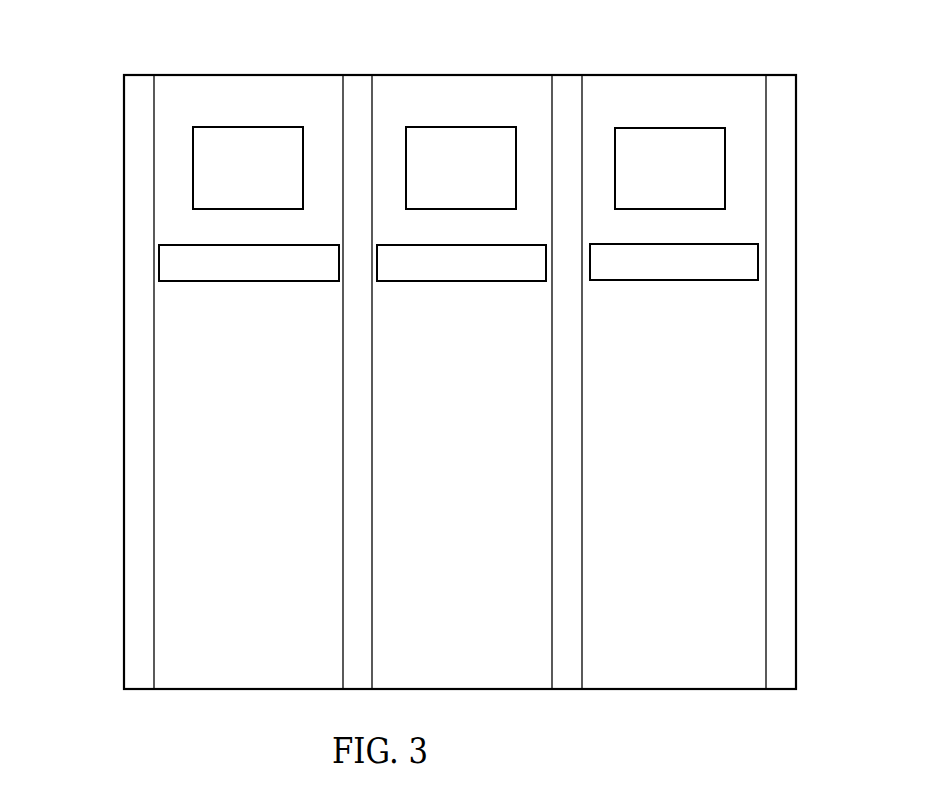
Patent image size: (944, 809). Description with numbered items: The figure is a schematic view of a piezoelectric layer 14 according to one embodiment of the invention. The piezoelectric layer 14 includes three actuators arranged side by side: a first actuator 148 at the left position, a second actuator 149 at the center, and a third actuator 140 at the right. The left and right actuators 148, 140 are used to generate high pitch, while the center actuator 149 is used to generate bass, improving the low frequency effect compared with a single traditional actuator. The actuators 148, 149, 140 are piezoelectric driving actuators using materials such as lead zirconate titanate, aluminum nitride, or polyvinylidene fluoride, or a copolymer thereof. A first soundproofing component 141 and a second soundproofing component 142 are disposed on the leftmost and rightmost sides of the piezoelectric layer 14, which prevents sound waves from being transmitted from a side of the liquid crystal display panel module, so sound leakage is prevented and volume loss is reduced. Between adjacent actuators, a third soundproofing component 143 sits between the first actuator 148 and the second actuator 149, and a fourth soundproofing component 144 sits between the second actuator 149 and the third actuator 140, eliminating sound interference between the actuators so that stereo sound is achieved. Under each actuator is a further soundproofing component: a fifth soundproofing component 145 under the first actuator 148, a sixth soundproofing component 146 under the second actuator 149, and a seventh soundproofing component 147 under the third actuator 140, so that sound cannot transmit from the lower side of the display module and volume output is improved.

The piezoelectric layer 14 is at (104, 207).
The third actuator 140 is at (669, 163).
The first soundproofing component 141 is at (132, 93).
The second soundproofing component 142 is at (778, 107).
The third soundproofing component 143 is at (360, 93).
The fourth soundproofing component 144 is at (569, 105).
The fifth soundproofing component 145 is at (203, 267).
The sixth soundproofing component 146 is at (472, 268).
The seventh soundproofing component 147 is at (739, 268).
The first actuator 148 is at (242, 152).
The second actuator 149 is at (460, 163).